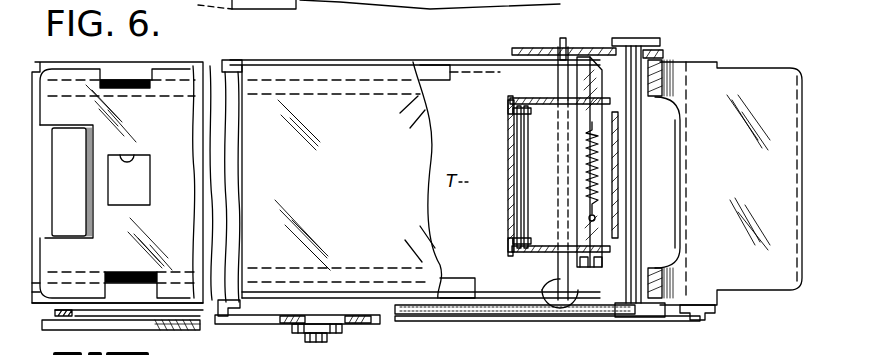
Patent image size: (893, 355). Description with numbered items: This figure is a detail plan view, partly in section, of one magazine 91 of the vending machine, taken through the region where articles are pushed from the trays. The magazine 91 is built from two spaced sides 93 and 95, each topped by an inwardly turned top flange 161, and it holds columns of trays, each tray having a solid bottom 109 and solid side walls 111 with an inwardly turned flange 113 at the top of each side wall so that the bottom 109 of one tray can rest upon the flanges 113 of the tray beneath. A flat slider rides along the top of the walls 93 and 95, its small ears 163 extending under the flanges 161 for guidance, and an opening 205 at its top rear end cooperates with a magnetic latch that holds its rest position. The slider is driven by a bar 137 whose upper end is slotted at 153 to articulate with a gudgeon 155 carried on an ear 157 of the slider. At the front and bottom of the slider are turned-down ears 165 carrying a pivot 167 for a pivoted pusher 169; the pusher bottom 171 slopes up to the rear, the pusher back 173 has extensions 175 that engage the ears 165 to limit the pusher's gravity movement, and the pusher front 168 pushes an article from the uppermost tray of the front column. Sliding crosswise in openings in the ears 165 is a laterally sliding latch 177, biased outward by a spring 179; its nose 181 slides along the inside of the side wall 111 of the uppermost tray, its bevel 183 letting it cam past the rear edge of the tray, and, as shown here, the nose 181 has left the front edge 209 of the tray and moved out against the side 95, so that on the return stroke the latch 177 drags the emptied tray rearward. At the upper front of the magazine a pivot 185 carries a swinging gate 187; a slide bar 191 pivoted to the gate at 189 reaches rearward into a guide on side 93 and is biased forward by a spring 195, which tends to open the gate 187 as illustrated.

The magazine 91 is at (309, 55).
The magazine side 93 is at (222, 318).
The magazine side 95 is at (237, 60).
The tray bottom 109 is at (435, 178).
The tray side wall 111 is at (462, 60).
The inwardly turned flange 113 is at (410, 179).
The bar 137 is at (95, 325).
The slot 153 is at (355, 322).
The gudgeon 155 is at (324, 340).
The ear 157 is at (265, 324).
The top flange 161 is at (401, 179).
The small ear 163 is at (136, 92).
The turned-down ear 165 is at (548, 98).
The pivot 167 is at (516, 190).
The pusher front 168 is at (620, 140).
The pivoted pusher 169 is at (626, 182).
The pusher bottom 171 is at (542, 203).
The pusher back 173 is at (506, 158).
The extension 175 is at (508, 106).
The laterally sliding latch 177 is at (620, 86).
The spring 179 is at (586, 170).
The nose 181 is at (582, 57).
The bevel 183 is at (592, 57).
The pivot 185 is at (636, 38).
The swinging gate 187 is at (775, 78).
The pivot 189 is at (695, 318).
The slide bar 191 is at (168, 312).
The spring 195 is at (440, 314).
The opening 205 is at (130, 155).
The front edge 209 is at (578, 308).